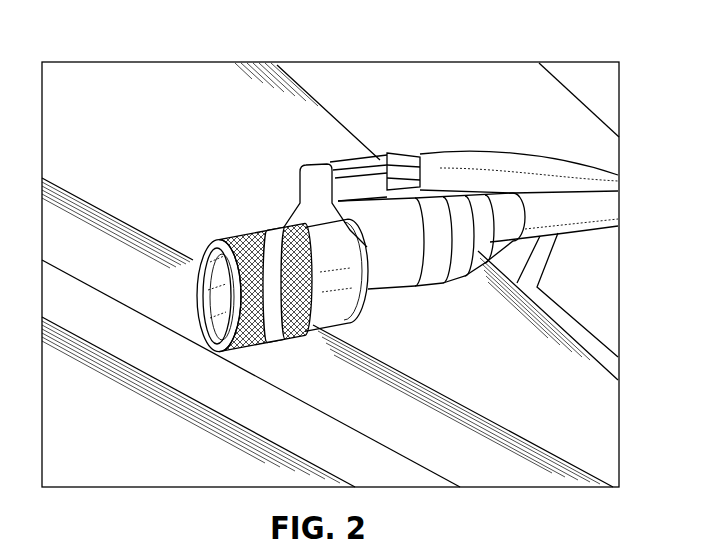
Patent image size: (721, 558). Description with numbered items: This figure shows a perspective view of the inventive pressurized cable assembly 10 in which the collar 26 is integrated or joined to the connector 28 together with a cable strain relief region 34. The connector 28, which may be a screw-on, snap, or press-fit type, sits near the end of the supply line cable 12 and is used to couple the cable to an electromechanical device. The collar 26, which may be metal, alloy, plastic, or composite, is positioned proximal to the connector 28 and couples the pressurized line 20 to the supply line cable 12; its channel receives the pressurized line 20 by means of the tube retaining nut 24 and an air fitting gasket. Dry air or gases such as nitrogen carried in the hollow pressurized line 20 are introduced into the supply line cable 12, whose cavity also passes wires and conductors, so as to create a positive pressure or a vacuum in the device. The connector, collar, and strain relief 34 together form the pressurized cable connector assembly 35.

The pressurized cable assembly 10 is at (244, 46).
The supply line cable 12 is at (583, 192).
The pressurized line 20 is at (480, 163).
The tube retaining nut 24 is at (400, 160).
The collar 26 is at (347, 165).
The connector 28 is at (298, 322).
The cable strain relief region 34 is at (473, 258).
The pressurized cable connector assembly 35 is at (397, 311).